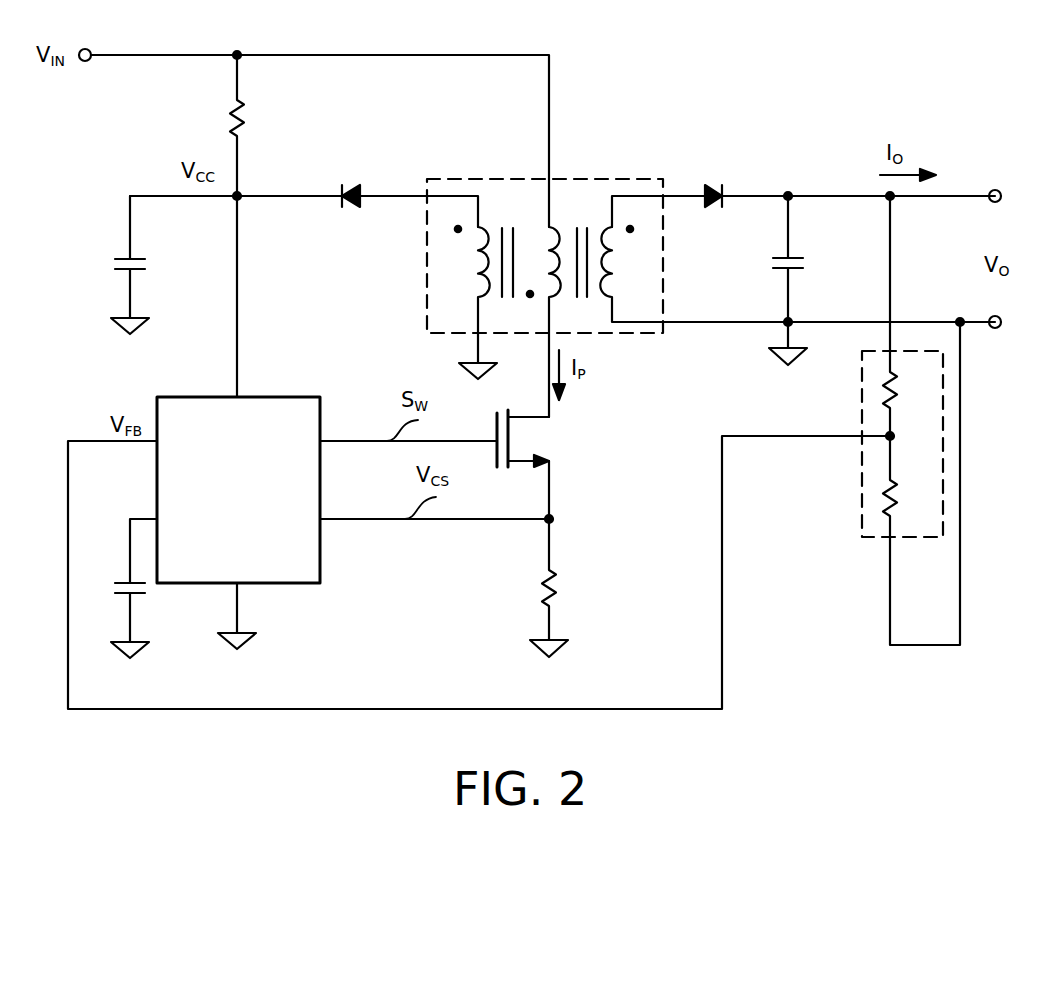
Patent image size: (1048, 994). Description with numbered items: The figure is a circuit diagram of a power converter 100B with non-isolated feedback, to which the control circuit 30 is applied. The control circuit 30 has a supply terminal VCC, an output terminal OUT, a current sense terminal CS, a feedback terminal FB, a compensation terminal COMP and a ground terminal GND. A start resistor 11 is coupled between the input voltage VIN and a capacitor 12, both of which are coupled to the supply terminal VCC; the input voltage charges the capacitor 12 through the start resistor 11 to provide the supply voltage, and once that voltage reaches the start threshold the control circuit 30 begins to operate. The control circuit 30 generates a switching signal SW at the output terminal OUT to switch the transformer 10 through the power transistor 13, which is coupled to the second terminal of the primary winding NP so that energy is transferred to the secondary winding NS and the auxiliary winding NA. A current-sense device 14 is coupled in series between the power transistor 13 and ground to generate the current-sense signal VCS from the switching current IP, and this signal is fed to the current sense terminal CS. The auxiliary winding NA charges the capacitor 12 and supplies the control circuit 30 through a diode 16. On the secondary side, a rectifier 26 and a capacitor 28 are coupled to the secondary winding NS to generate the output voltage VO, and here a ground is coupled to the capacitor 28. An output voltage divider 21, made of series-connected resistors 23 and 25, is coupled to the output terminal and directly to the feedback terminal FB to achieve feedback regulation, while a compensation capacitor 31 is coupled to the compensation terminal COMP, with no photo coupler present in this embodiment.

The power converter 100B is at (892, 64).
The transformer 10 is at (711, 283).
The start resistor 11 is at (258, 125).
The capacitor 12 is at (147, 265).
The power transistor 13 is at (541, 464).
The current-sense device 14 is at (564, 588).
The diode 16 is at (357, 194).
The output voltage divider 21 is at (880, 444).
The resistor 23 is at (909, 316).
The resistor 25 is at (921, 483).
The rectifier 26 is at (848, 182).
The capacitor 28 is at (805, 278).
The control circuit 30 is at (353, 508).
The compensation capacitor 31 is at (119, 588).